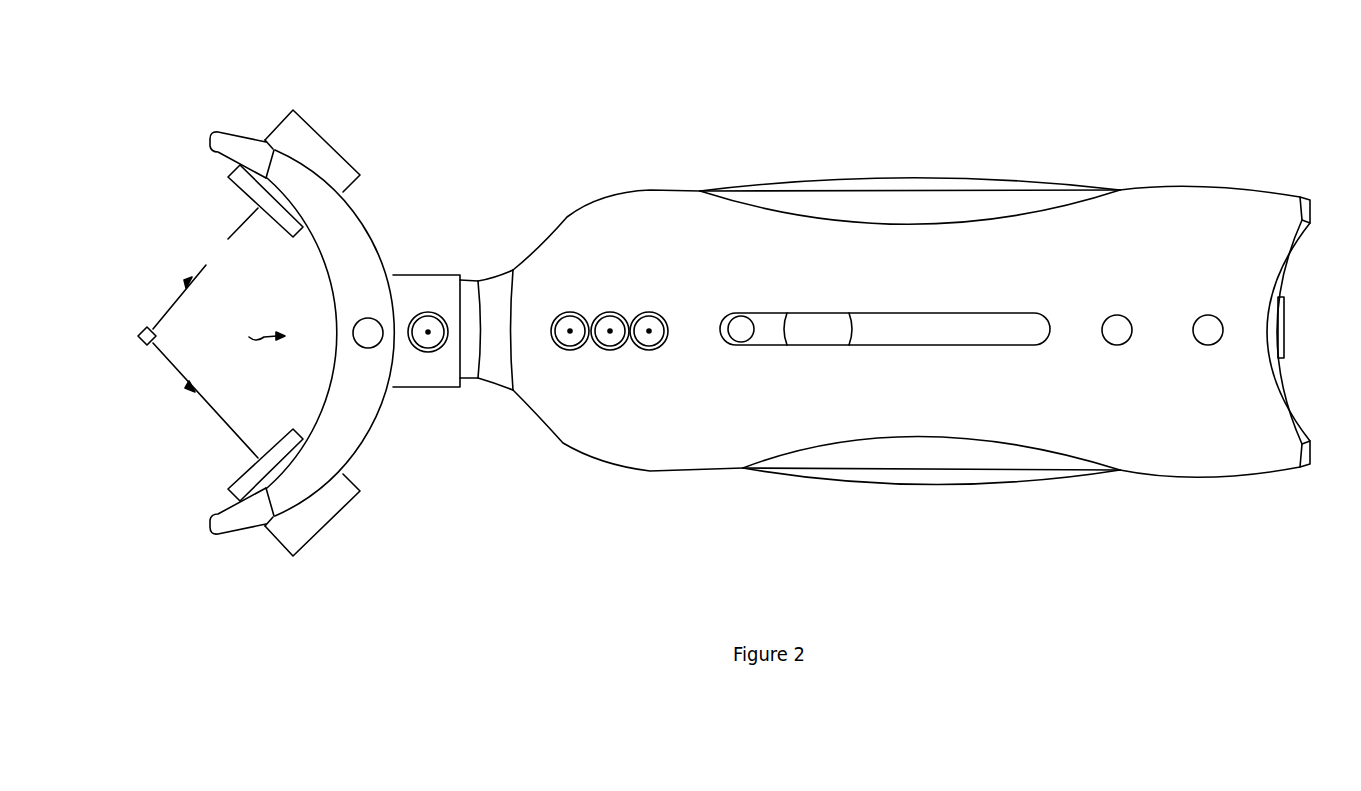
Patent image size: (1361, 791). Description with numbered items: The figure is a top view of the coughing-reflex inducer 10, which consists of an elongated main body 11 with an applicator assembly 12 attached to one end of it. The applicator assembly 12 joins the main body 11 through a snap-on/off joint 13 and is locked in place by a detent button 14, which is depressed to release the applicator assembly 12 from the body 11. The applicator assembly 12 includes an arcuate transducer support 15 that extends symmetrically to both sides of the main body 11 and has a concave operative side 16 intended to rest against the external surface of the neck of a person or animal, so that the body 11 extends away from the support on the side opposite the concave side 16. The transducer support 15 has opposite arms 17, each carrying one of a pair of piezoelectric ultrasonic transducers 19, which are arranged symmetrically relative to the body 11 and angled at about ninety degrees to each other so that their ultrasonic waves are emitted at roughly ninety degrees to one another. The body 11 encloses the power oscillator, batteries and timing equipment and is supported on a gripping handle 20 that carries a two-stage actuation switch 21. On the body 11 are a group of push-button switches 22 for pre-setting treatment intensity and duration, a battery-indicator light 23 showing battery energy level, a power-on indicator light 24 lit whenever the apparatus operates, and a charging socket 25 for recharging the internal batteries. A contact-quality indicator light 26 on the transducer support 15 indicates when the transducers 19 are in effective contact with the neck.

The coughing-reflex inducer 10 is at (1093, 90).
The main body 11 is at (663, 465).
The applicator assembly 12 is at (349, 84).
The snap-on/off joint 13 is at (453, 378).
The detent button 14 is at (428, 312).
The transducer support 15 is at (326, 413).
The concave operative side 16 is at (255, 336).
The arms 17 is at (360, 230).
The ultrasonic transducers 19 is at (331, 165).
The gripping handle 20 is at (870, 323).
The two-stage actuation switch 21 is at (745, 316).
The push-button switches 22 is at (648, 312).
The battery-indicator light 23 is at (1218, 322).
The power-on indicator light 24 is at (1129, 321).
The charging socket 25 is at (1287, 323).
The contact quality indicator light 26 is at (367, 320).